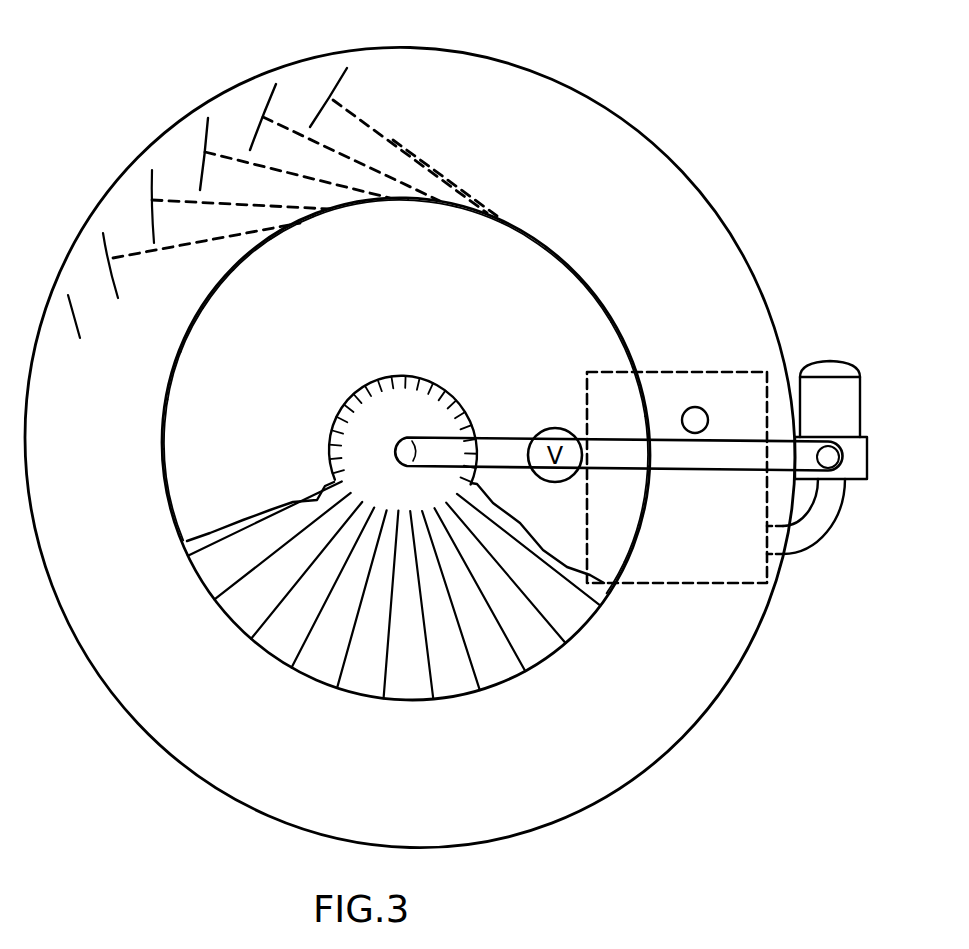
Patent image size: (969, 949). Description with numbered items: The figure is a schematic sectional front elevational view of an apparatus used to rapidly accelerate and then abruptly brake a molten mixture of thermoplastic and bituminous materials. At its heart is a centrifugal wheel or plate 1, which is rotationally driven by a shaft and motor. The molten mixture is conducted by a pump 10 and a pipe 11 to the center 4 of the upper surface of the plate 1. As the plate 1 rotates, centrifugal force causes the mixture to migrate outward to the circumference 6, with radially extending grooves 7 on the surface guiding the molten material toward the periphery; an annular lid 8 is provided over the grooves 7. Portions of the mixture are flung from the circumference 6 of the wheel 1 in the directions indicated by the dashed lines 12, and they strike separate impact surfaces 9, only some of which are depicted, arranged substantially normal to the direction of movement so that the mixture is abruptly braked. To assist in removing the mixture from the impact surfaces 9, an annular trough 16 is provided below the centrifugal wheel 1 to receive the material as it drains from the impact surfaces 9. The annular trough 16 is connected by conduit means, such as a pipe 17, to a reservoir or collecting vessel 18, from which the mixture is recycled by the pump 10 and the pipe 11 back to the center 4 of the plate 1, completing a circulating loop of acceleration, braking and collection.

The centrifugal wheel 1 is at (577, 622).
The center 4 is at (373, 457).
The circumference 6 is at (313, 680).
The radially extending grooves 7 is at (367, 677).
The annular lid 8 is at (183, 475).
The impact surfaces 9 is at (208, 112).
The pump 10 is at (855, 480).
The pipe 11 is at (497, 446).
The dashed lines 12 is at (278, 167).
The annular trough 16 is at (517, 822).
The pipe 17 is at (707, 409).
The collecting vessel 18 is at (697, 584).